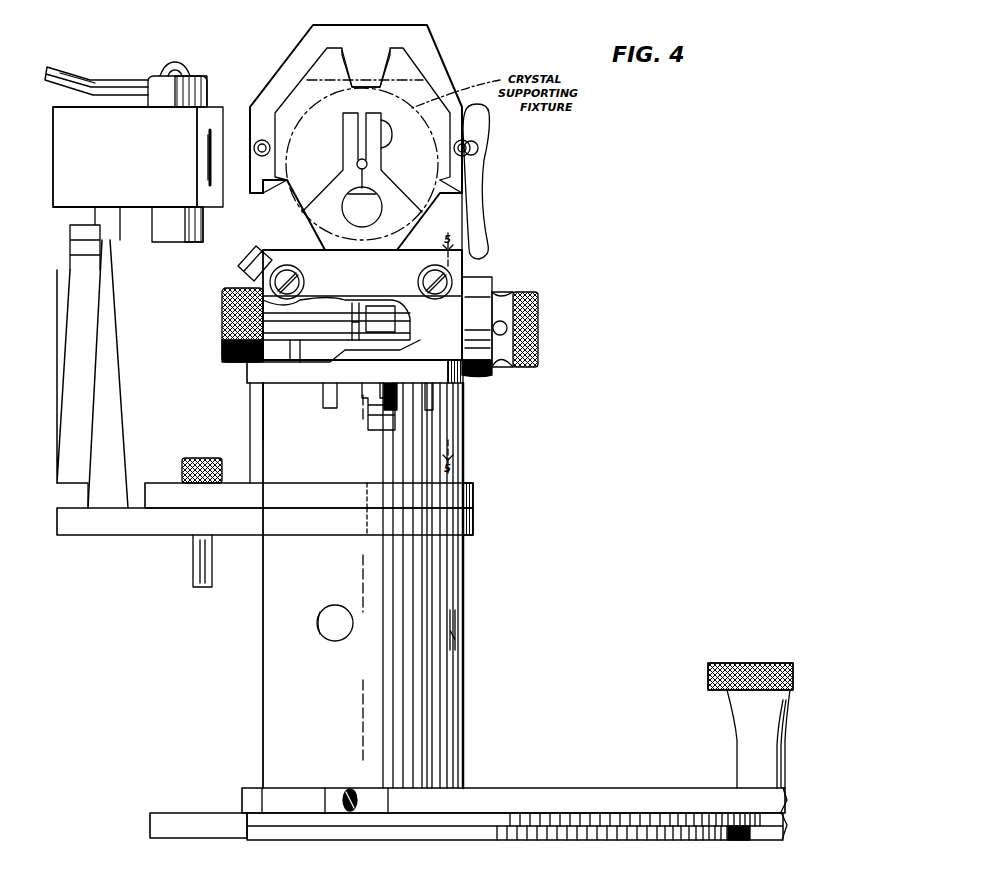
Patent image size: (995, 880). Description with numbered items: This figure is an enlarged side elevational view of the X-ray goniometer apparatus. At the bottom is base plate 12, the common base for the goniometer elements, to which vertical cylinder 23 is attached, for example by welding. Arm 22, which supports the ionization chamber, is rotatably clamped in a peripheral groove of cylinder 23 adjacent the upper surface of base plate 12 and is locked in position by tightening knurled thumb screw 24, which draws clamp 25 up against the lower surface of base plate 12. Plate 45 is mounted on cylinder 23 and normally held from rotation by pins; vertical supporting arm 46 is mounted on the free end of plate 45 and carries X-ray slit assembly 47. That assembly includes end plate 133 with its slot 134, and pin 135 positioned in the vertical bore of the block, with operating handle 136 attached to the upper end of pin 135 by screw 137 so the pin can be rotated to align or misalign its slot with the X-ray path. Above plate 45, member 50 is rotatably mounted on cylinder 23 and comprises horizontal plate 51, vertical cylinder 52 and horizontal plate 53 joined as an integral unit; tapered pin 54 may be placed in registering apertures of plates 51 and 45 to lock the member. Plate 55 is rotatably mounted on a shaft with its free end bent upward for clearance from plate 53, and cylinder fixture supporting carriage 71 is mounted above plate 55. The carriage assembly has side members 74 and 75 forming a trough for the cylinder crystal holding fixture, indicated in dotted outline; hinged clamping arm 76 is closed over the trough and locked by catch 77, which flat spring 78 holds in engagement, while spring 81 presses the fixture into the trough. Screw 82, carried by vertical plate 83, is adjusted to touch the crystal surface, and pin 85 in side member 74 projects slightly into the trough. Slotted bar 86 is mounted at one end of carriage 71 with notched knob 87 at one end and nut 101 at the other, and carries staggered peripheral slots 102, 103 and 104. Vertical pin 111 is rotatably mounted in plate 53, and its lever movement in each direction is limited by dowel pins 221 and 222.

The base plate 12 is at (190, 835).
The arm 22 is at (635, 788).
The vertical cylinder 23 is at (462, 664).
The knurled thumb screw 24 is at (750, 663).
The clamp 25 is at (768, 838).
The plate 45 is at (129, 532).
The vertical supporting arm 46 is at (68, 338).
The X-ray slit assembly 47 is at (57, 162).
The member 50 is at (363, 574).
The horizontal plate 51 is at (168, 486).
The vertical cylinder 52 is at (263, 430).
The horizontal plate 53 is at (300, 383).
The tapered pin 54 is at (190, 458).
The plate 55 is at (290, 352).
The cylinder fixture supporting carriage 71 is at (490, 380).
The side member 74 is at (268, 228).
The side member 75 is at (455, 222).
The hinged clamping arm 76 is at (292, 68).
The catch 77 is at (482, 135).
The flat spring 78 is at (468, 270).
The spring 81 is at (386, 65).
The screw 82 is at (358, 161).
The vertical plate 83 is at (333, 190).
The pin 85 is at (246, 266).
The slotted bar 86 is at (318, 318).
The notched knob 87 is at (530, 296).
The nut 101 is at (228, 322).
The peripheral slot 102 is at (356, 318).
The peripheral slot 103 is at (380, 318).
The peripheral slot 104 is at (355, 348).
The vertical pin 111 is at (365, 400).
The end plate 133 is at (218, 112).
The slot 134 is at (212, 180).
The pin 135 is at (178, 240).
The operating handle 136 is at (128, 88).
The screw 137 is at (188, 70).
The dowel pin 221 is at (436, 400).
The dowel pin 222 is at (325, 400).